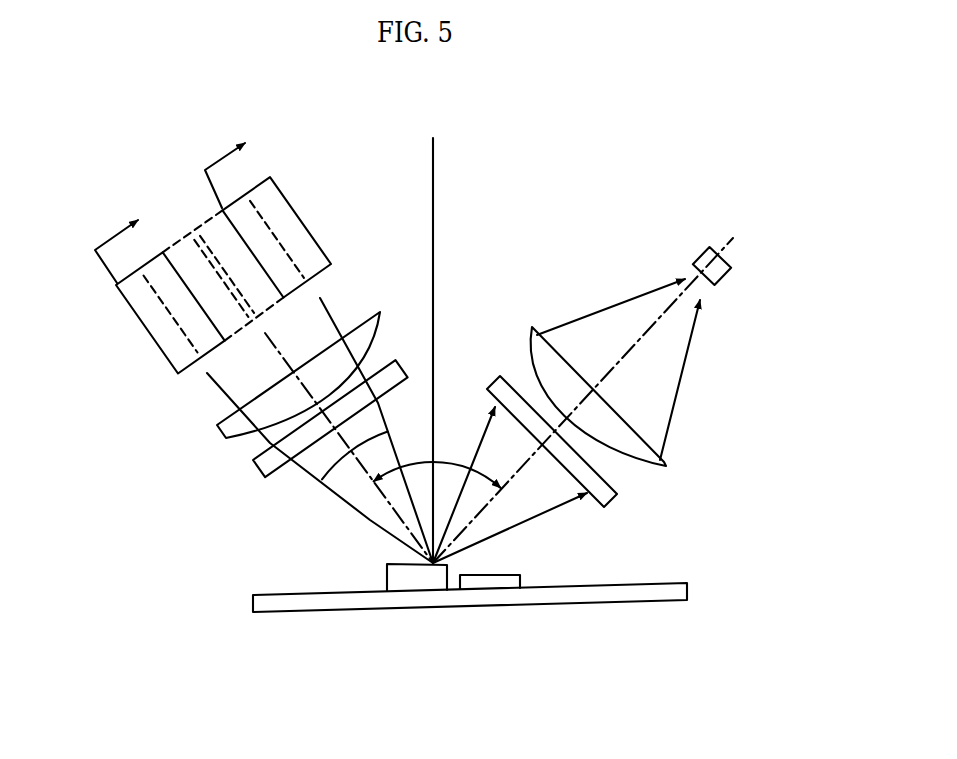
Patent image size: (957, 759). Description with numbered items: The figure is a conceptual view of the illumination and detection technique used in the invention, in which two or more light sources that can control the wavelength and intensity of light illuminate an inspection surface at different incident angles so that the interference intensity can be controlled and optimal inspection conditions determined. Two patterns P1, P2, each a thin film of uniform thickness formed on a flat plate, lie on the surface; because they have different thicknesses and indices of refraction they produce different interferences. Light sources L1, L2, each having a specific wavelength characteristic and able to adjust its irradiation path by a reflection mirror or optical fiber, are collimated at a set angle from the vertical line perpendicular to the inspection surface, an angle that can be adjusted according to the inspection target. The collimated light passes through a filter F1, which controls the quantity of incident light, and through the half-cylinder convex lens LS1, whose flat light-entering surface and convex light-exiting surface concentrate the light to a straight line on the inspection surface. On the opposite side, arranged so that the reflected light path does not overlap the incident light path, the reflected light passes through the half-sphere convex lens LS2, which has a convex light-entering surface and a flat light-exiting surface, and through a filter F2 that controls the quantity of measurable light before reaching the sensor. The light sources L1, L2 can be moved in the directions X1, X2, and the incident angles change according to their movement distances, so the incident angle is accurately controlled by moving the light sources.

The light source L1 is at (148, 333).
The light source L2 is at (296, 215).
The half-cylinder convex lens LS1 is at (216, 430).
The half-sphere convex lens LS2 is at (664, 468).
The filter F1 is at (266, 478).
The filter F2 is at (615, 505).
The pattern P1 is at (417, 580).
The pattern P2 is at (493, 583).
The movement direction of light source X1 is at (111, 244).
The movement direction of light source X2 is at (215, 168).